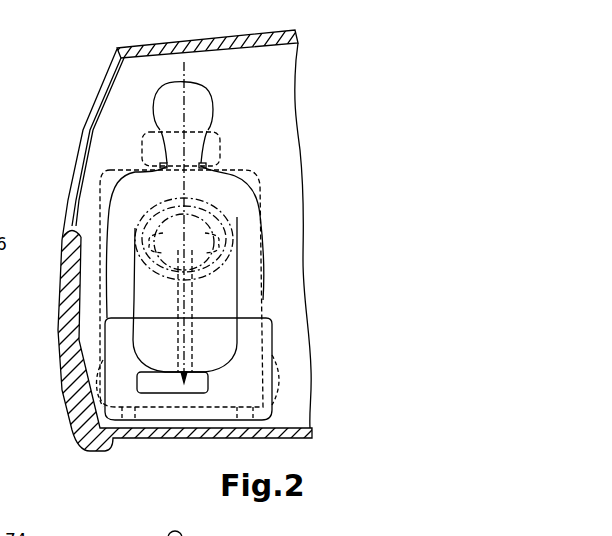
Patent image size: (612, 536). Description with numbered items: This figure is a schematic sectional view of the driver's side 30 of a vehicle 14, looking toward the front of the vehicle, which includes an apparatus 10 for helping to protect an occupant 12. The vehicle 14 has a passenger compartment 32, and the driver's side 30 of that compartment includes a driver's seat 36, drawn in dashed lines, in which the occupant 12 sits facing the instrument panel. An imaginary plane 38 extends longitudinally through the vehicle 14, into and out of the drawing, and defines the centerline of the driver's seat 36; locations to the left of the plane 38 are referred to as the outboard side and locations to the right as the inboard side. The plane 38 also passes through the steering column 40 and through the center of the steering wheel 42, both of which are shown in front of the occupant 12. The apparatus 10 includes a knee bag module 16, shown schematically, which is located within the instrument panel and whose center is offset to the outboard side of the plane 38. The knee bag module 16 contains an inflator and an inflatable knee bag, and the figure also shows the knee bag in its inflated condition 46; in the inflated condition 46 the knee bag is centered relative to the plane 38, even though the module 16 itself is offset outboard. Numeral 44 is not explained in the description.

The apparatus 10 is at (105, 388).
The occupant 12 is at (213, 100).
The vehicle 14 is at (163, 43).
The knee bag module 16 is at (170, 393).
The driver's side 30 is at (261, 52).
The passenger compartment 32 is at (266, 143).
The driver's seat 36 is at (258, 172).
The imaginary plane 38 is at (183, 69).
The steering column 40 is at (192, 302).
The steering wheel 42 is at (222, 210).
The side pillar 44 is at (68, 258).
The inflated condition 46 is at (272, 345).